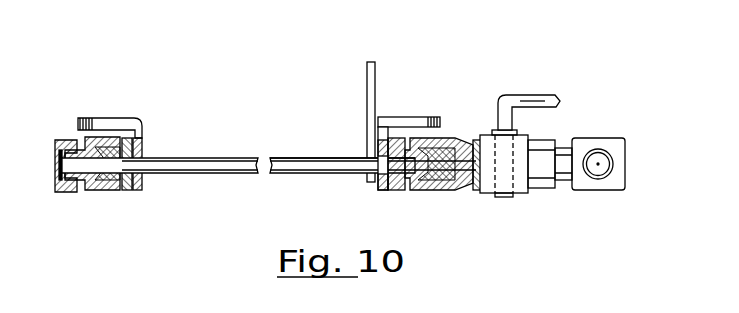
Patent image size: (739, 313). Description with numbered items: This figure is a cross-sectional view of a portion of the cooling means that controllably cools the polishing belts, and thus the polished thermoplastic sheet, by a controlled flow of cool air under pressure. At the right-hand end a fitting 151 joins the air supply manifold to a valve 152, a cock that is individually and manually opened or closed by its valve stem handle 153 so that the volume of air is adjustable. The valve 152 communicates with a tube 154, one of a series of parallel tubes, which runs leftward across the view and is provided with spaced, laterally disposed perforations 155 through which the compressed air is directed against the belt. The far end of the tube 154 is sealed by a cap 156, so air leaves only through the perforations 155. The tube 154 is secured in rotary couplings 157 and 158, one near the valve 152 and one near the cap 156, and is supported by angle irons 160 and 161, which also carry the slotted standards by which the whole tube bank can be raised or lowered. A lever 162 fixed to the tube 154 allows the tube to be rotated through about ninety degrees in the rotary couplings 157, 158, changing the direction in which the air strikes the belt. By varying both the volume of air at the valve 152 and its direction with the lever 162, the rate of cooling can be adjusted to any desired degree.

The fitting 151 is at (612, 142).
The valve 152 is at (518, 190).
The valve stem handle 153 is at (518, 98).
The tube 154 is at (302, 156).
The perforation 155 is at (243, 175).
The cap 156 is at (67, 192).
The rotary coupling 157 is at (419, 197).
The rotary coupling 158 is at (126, 199).
The angle iron 160 is at (126, 122).
The angle iron 161 is at (400, 118).
The lever 162 is at (375, 78).